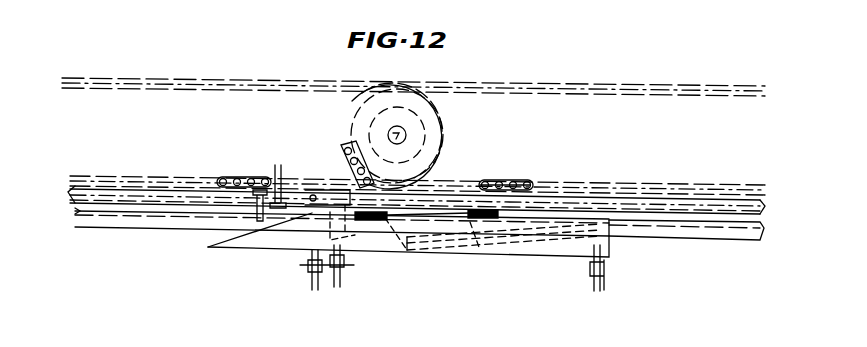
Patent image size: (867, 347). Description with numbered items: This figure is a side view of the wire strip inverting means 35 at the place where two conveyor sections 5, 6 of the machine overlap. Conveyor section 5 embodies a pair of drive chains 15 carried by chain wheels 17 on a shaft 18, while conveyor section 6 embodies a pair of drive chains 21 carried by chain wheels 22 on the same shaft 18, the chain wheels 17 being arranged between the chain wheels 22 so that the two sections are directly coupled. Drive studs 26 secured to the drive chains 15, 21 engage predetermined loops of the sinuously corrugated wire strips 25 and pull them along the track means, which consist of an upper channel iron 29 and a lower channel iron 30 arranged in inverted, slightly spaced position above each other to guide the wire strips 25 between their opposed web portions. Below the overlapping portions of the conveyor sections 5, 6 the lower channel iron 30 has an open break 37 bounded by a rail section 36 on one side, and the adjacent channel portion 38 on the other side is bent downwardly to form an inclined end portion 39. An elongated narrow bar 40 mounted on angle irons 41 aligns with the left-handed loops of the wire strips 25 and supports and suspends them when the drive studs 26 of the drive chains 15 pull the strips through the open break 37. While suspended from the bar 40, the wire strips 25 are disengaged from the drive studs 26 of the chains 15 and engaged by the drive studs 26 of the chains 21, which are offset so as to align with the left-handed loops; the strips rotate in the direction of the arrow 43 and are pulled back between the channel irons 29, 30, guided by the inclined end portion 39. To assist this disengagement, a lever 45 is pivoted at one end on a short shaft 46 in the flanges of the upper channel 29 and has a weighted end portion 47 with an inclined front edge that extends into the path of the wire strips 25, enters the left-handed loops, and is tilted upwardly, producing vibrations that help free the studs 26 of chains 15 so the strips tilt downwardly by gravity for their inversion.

The conveyor section 5 is at (226, 97).
The conveyor section 6 is at (672, 105).
The drive chains 15 is at (199, 82).
The chain wheels 17 is at (360, 106).
The shaft 18 is at (405, 132).
The drive chains 21 is at (642, 88).
The chain wheels 22 is at (430, 118).
The sinuously corrugated wire strips 25 is at (352, 276).
The drive studs 26 is at (245, 178).
The upper channel iron 29 is at (124, 187).
The lower channel iron 30 is at (134, 230).
The wire strip inverting means 35 is at (278, 258).
The rail section 36 is at (183, 226).
The open breaks 37 is at (315, 217).
The channel portions 38 is at (694, 240).
The inclined end portions 39 is at (463, 246).
The elongated narrow bars 40 is at (526, 246).
The angle irons 41 is at (346, 290).
The arrow 43 is at (366, 233).
The levers 45 is at (425, 167).
The short shafts 46 is at (316, 186).
The weighted end portions 47 is at (404, 240).